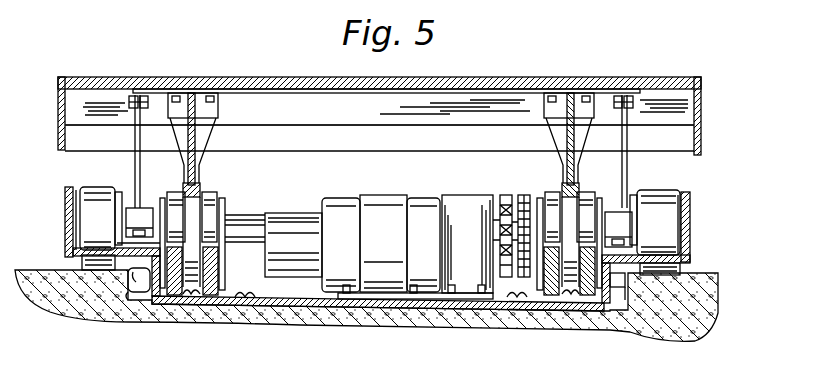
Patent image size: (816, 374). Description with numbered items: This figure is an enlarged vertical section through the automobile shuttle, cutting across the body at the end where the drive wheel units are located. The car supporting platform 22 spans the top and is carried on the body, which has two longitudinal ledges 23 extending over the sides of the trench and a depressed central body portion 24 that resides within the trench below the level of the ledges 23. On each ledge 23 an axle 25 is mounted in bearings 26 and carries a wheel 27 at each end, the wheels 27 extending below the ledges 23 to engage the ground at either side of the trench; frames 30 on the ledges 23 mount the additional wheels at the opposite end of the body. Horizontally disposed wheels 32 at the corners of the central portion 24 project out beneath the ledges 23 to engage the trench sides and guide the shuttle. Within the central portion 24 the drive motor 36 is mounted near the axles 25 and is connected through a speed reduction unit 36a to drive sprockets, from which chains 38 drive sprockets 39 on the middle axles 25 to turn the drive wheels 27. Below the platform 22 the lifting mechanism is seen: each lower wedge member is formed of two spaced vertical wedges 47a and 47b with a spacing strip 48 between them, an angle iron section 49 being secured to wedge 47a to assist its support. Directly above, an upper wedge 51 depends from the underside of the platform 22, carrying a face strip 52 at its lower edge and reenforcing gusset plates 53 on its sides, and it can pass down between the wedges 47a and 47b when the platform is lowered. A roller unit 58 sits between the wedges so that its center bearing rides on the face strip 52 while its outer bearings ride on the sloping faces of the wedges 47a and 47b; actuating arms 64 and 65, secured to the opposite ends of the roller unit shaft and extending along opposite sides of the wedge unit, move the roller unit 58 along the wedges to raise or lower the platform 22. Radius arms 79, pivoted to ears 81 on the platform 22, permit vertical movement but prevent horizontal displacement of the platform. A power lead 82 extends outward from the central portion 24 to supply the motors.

The car supporting platform 22 is at (430, 86).
The longitudinal ledges 23 is at (72, 256).
The central body portion 24 is at (380, 306).
The axles 25 is at (256, 236).
The bearings 26 is at (374, 227).
The wheels 27 is at (103, 234).
The frames 30 is at (70, 190).
The horizontally disposed wheels 32 is at (128, 300).
The drive motor 36 is at (362, 207).
The speed reduction unit 36a is at (455, 200).
The chains 38 is at (500, 246).
The sprockets 39 is at (512, 195).
The vertical wedge 47a is at (215, 297).
The vertical wedge 47b is at (176, 300).
The spacing strip 48 is at (192, 290).
The angle iron section 49 is at (252, 300).
The upper wedges 51 is at (203, 140).
The face strip 52 is at (190, 186).
The reenforcing gusset plates 53 is at (215, 104).
The roller unit 58 is at (218, 193).
The actuating arm 64 is at (226, 204).
The actuating arm 65 is at (163, 197).
The radius arms 79 is at (135, 136).
The ears 81 is at (145, 113).
The power lead 82 is at (145, 295).